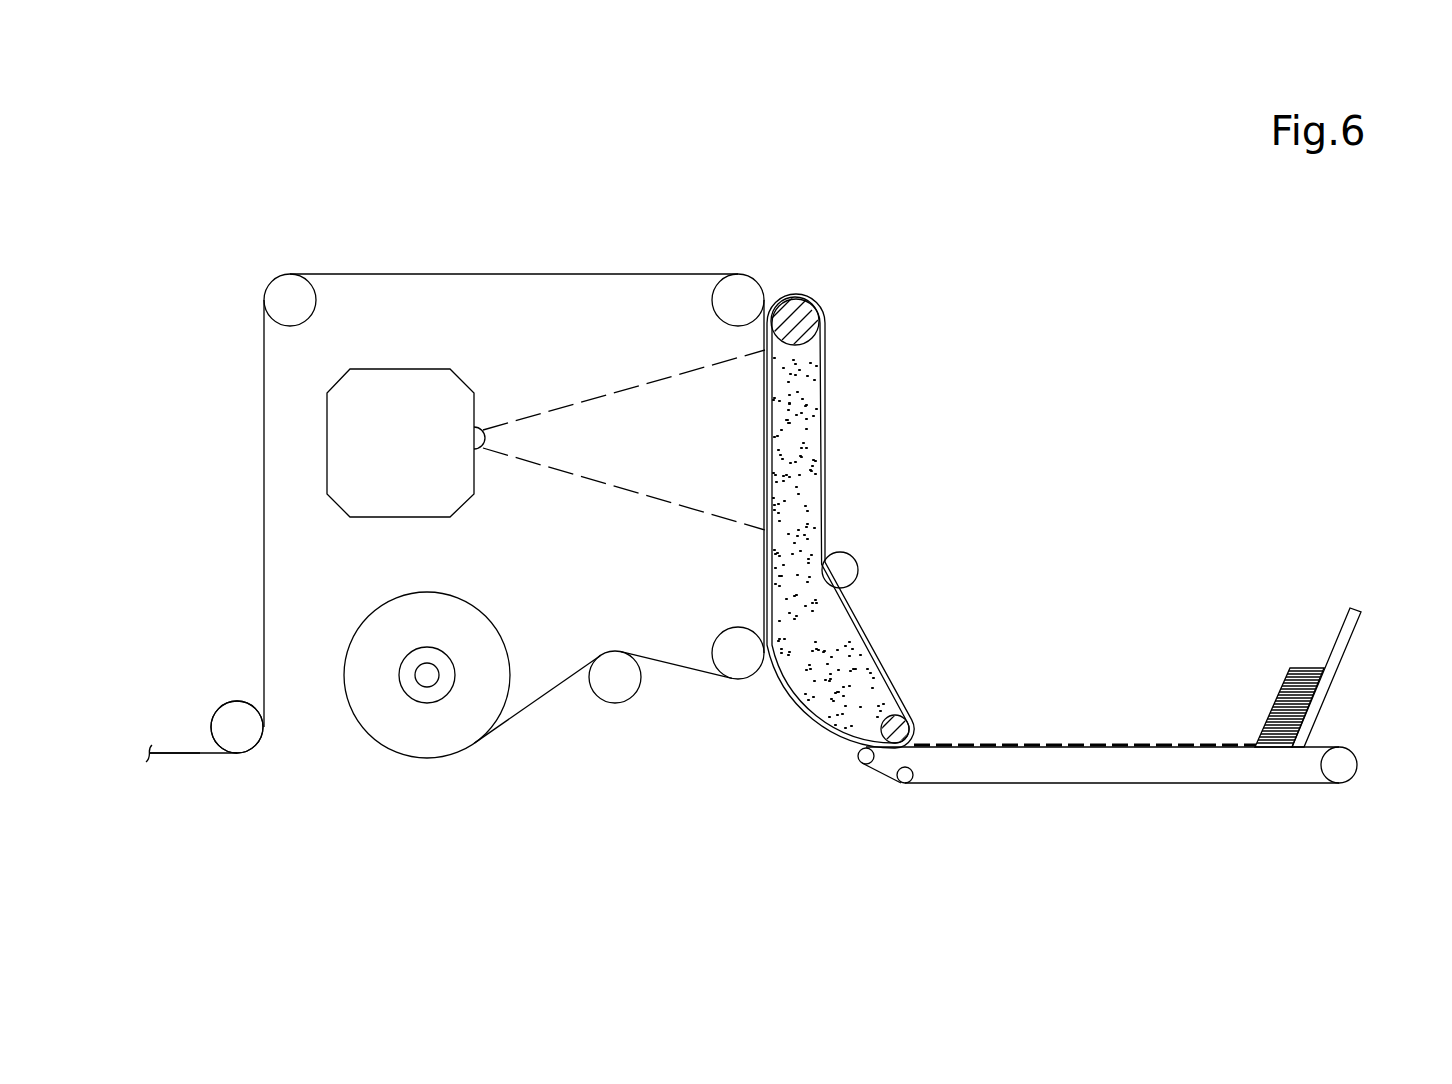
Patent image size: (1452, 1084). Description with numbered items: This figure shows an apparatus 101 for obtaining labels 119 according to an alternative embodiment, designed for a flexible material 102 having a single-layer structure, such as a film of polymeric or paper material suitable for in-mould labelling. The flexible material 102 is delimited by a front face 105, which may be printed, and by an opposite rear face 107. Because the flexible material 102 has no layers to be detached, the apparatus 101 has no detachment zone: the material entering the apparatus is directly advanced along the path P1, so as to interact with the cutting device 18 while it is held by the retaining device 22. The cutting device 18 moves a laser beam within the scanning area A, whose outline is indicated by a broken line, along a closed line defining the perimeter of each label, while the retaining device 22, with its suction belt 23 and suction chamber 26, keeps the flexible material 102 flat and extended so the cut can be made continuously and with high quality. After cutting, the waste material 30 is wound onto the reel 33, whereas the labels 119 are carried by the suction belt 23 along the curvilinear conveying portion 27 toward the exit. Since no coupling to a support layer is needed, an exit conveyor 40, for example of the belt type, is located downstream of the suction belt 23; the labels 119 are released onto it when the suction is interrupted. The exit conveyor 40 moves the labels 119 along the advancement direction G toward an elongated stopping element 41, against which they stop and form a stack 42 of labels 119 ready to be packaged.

The cutting device 18 is at (394, 354).
The retaining device 22 is at (843, 497).
The suction belt 23 is at (823, 355).
The suction chamber 26 is at (792, 450).
The conveying portion 27 is at (805, 717).
The waste material 30 is at (680, 667).
The reel 33 is at (387, 720).
The exit conveyor 40 is at (1102, 785).
The stopping element 41 is at (1343, 632).
The stack 42 is at (1305, 668).
The apparatus 101 is at (1035, 327).
The flexible material 102 is at (627, 273).
The front face 105 is at (175, 752).
The rear face 107 is at (196, 755).
The labels 119 is at (982, 745).
The path P1 is at (505, 252).
The scanning area A is at (628, 388).
The advancement direction G is at (1118, 718).